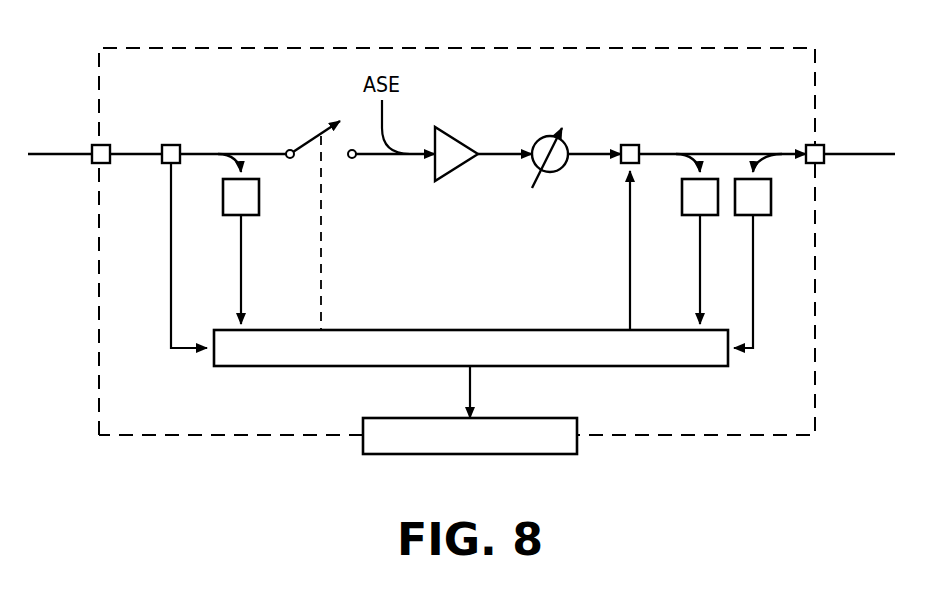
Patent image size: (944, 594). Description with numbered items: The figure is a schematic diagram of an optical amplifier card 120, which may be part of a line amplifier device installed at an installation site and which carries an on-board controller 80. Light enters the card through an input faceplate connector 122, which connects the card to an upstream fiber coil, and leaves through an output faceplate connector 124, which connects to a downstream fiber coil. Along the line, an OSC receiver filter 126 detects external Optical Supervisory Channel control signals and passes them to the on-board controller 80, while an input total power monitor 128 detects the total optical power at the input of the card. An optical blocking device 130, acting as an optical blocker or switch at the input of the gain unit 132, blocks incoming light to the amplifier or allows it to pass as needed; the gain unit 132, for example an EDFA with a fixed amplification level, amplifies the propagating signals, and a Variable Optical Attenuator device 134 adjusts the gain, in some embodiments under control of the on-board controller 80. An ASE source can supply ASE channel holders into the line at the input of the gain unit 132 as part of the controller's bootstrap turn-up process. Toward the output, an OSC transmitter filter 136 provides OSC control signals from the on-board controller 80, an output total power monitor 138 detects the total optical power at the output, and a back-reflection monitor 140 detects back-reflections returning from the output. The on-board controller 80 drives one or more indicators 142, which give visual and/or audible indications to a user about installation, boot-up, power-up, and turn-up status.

The optical amplifier card 120 is at (390, 48).
The input faceplate connector 122 is at (92, 164).
The output faceplate connector 124 is at (820, 163).
The OSC receiver filter 126 is at (170, 143).
The input total power monitor 128 is at (223, 197).
The optical blocking device 130 is at (315, 135).
The gain unit 132 is at (453, 173).
The Variable Optical Attenuator device 134 is at (543, 135).
The OSC transmitter filter 136 is at (622, 145).
The output total power monitor 138 is at (682, 198).
The back-reflection monitor 140 is at (772, 198).
The on-board controller 80 is at (472, 330).
The indicators 142 is at (392, 418).